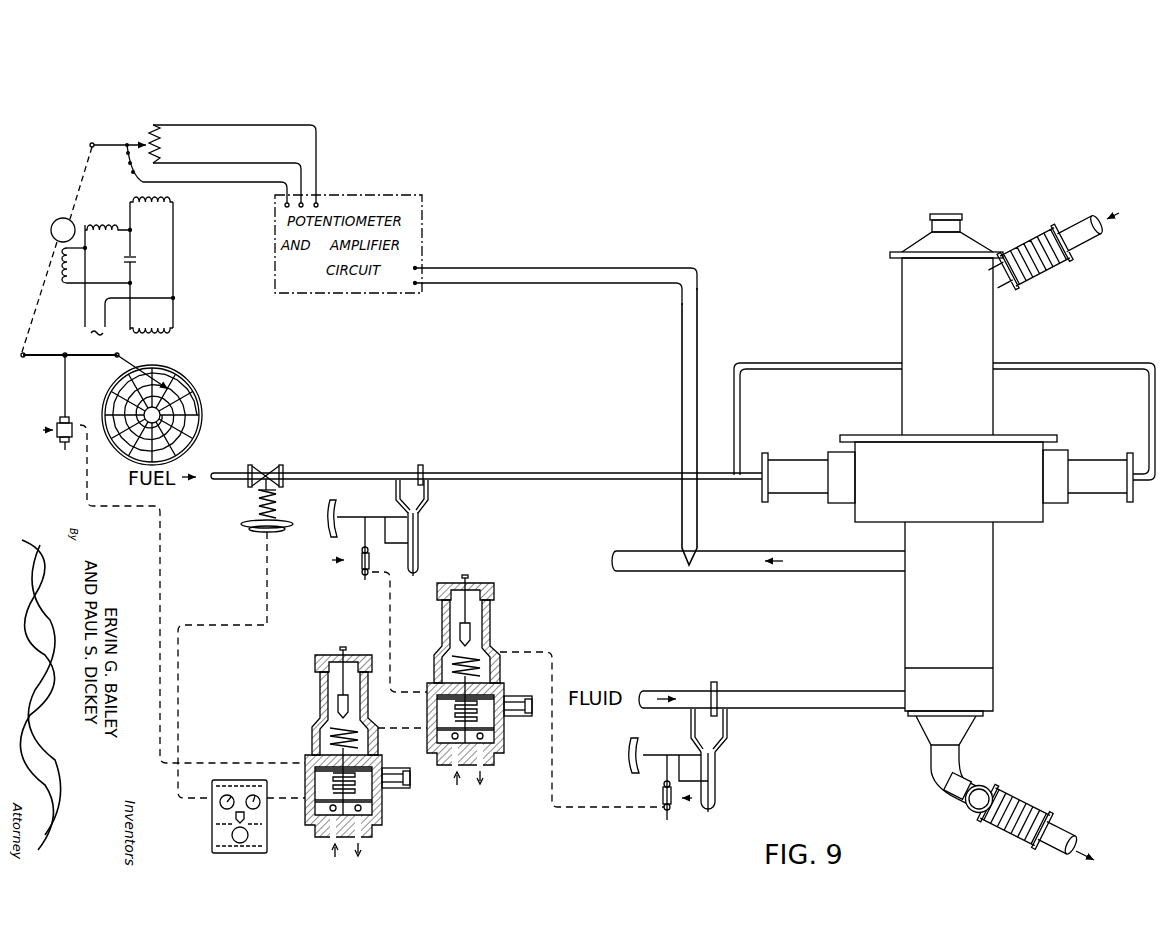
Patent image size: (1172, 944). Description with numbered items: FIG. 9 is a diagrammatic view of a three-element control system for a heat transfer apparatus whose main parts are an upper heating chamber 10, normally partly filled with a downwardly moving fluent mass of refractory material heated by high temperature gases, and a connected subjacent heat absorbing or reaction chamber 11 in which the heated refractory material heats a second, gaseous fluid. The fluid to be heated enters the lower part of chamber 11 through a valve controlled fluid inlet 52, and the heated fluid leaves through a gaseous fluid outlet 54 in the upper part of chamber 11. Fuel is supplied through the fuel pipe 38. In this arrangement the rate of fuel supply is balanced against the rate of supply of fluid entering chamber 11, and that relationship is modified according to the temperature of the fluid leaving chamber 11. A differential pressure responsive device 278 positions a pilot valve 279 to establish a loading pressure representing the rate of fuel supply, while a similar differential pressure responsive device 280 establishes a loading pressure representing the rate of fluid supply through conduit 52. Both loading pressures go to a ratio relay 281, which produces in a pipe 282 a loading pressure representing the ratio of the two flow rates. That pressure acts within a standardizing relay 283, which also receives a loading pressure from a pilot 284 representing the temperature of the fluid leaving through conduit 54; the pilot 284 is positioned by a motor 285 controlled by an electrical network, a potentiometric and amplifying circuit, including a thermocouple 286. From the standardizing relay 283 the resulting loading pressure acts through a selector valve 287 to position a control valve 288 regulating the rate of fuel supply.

The upper heating chamber 10 is at (960, 346).
The heat absorbing or reaction chamber 11 is at (954, 612).
The fuel supply pipe 38 is at (380, 472).
The valve controlled fluid inlet 52 is at (789, 708).
The gaseous fluid outlet 54 is at (787, 571).
The differential pressure responsive device 278 is at (462, 538).
The pilot valve 279 is at (357, 591).
The differential pressure responsive device 280 is at (759, 792).
The ratio relay 281 is at (491, 614).
The pipe 282 is at (405, 728).
The standardizing relay 283 is at (320, 683).
The pilot 284 is at (77, 480).
The motor 285 is at (60, 212).
The thermocouple 286 is at (678, 567).
The selector valve 287 is at (212, 818).
The control valve 288 is at (257, 508).